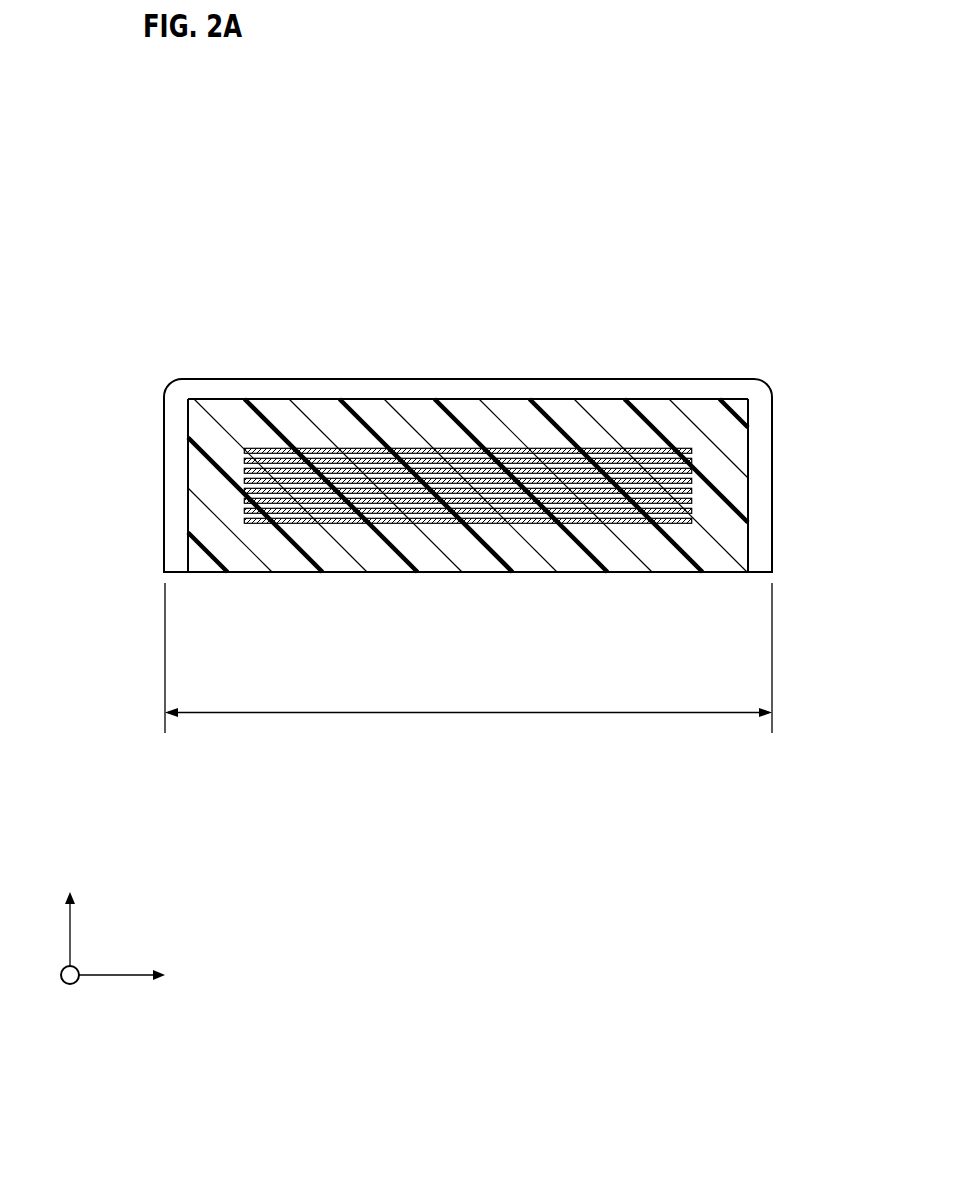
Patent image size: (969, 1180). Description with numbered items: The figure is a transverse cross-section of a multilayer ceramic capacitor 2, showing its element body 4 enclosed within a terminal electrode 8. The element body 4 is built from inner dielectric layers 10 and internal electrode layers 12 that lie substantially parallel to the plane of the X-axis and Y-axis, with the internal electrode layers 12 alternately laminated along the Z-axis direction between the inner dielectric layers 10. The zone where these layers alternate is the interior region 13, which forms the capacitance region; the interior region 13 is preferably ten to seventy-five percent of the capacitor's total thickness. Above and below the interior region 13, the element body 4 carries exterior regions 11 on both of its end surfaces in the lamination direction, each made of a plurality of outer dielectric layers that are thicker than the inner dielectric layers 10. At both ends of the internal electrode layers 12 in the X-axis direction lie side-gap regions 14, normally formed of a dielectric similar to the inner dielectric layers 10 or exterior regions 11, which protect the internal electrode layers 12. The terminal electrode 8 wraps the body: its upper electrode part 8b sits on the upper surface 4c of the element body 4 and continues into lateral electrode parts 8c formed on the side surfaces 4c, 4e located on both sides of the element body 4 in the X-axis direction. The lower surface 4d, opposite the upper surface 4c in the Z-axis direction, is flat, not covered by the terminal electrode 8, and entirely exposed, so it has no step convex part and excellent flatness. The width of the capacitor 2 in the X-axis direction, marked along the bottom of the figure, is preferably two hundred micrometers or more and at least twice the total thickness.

The multilayer ceramic capacitor 2 is at (221, 354).
The element body 4 is at (491, 396).
The upper surface 4c is at (617, 400).
The lower surface 4d is at (682, 572).
The side surface 4e is at (187, 462).
The second terminal electrode 8 is at (726, 376).
The upper electrode part 8b is at (546, 388).
The lateral electrode part 8c is at (173, 505).
The inner dielectric layer 10 is at (562, 528).
The exterior region 11 is at (338, 413).
The internal electrode layer 12 is at (467, 528).
The interior region 13 is at (416, 440).
The side-gap region 14 is at (203, 423).